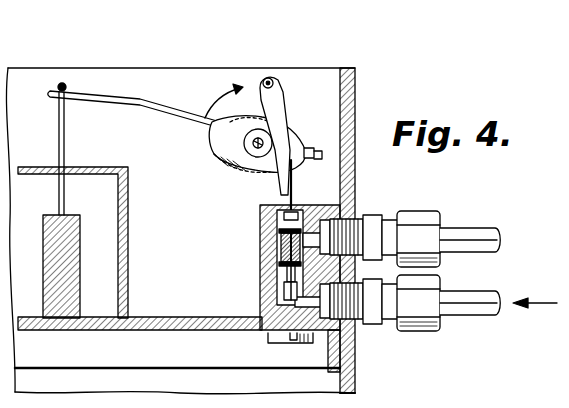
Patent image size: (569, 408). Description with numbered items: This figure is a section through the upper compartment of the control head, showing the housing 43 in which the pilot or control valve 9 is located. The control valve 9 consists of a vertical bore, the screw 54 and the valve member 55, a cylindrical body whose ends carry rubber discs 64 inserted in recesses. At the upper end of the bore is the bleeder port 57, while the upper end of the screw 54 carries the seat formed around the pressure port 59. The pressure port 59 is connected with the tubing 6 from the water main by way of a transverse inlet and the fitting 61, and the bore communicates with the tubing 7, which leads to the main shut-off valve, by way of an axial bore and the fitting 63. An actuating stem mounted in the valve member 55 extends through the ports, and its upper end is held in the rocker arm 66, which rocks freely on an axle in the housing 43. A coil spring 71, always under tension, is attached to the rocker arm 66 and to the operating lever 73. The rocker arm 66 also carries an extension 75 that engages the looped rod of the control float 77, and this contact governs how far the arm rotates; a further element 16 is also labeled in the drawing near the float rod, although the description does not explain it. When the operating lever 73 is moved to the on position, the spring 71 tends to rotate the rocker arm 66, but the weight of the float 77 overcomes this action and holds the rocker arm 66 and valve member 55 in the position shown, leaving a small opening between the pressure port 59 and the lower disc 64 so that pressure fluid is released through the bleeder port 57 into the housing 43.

The housing 43 is at (356, 104).
The control float 77 is at (128, 257).
The rod 16 is at (65, 134).
The extension 75 is at (142, 100).
The coil spring 71 is at (270, 172).
The rocker arm 66 is at (286, 105).
The pilot or control valve 9 is at (262, 214).
The discs 64 is at (280, 231).
The valve member 55 is at (279, 249).
The pressure port 59 is at (275, 280).
The bleeder port 57 is at (296, 215).
The screw 54 is at (268, 342).
The fitting 63 is at (412, 215).
The tubing 7 is at (464, 228).
The fitting 61 is at (416, 327).
The tubing 6 is at (465, 316).
The operating lever 73 is at (370, 407).